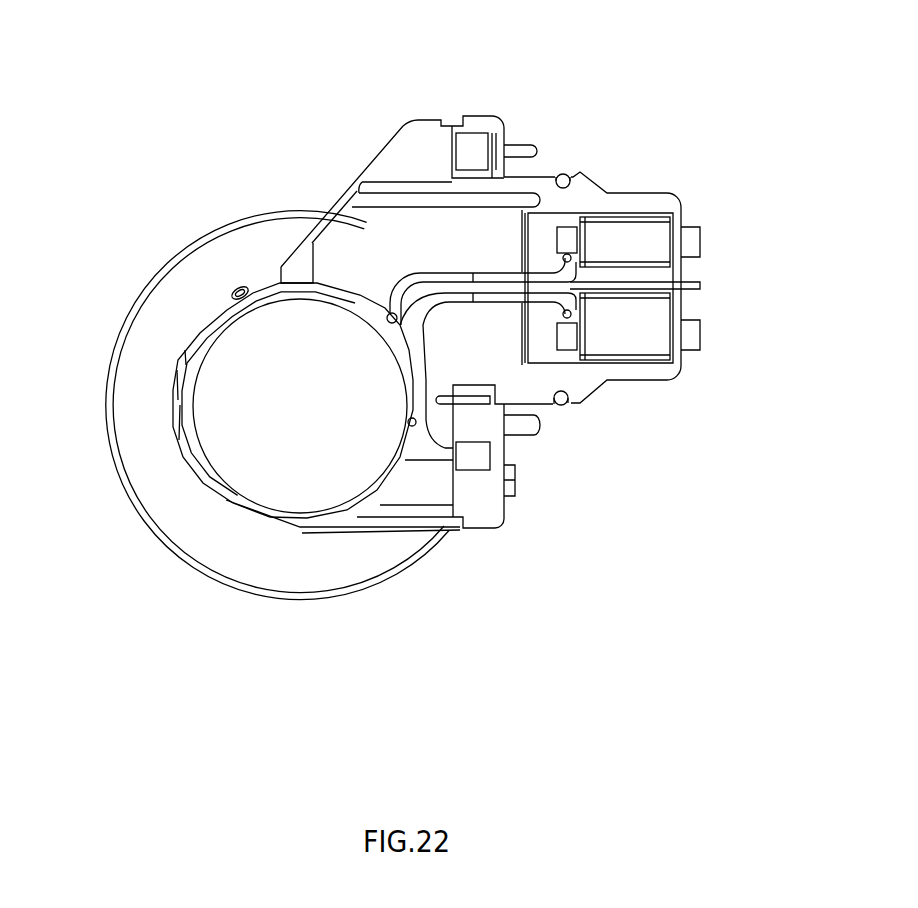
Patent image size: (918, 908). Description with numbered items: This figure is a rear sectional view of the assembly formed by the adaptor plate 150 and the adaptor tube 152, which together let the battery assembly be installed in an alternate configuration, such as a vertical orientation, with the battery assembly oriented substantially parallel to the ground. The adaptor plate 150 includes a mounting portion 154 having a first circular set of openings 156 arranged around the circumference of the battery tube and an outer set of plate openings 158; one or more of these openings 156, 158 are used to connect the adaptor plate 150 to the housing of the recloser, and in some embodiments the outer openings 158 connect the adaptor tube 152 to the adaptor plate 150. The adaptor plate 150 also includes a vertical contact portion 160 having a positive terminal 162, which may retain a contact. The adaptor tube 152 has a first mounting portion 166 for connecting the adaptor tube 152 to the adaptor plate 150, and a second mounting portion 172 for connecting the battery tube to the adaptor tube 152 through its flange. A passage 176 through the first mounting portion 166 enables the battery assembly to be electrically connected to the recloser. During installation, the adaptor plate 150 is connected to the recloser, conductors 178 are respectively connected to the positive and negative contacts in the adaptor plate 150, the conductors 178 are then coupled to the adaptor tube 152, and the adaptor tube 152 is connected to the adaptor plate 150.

The adaptor plate 150 is at (505, 531).
The adaptor tube 152 is at (235, 524).
The mounting portion 154 is at (503, 142).
The first circular set of openings 156 is at (489, 108).
The outer set of plate openings 158 is at (500, 482).
The vertical contact portion 160 is at (661, 187).
The positive terminal 162 is at (605, 247).
The first mounting portion 166 is at (382, 138).
The second mounting portion 172 is at (160, 312).
The passage 176 is at (418, 247).
The conductors 178 is at (447, 308).